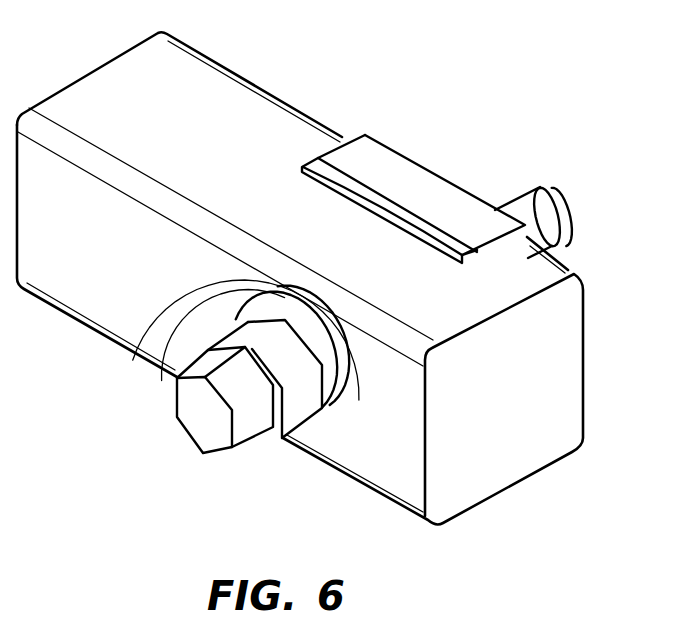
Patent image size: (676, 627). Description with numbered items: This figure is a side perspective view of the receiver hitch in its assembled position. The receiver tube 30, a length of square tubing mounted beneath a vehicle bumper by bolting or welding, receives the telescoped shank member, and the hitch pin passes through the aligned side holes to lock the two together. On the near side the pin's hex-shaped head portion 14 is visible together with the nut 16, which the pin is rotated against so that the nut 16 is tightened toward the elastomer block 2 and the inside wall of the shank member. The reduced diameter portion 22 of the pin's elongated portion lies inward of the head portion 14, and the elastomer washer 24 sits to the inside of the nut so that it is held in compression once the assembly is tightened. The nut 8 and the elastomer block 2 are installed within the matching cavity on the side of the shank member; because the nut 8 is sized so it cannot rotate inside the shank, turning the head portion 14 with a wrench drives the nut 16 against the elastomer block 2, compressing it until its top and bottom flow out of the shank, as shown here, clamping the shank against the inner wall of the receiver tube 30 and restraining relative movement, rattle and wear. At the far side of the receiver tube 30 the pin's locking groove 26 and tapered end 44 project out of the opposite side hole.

The elastomer block 2 is at (365, 185).
The nut 8 is at (440, 177).
The head portion 14 is at (200, 425).
The nut 16 is at (255, 420).
The reduced diameter portion 22 is at (161, 380).
The elastomer washer 24 is at (133, 360).
The locking groove 26 is at (540, 193).
The receiver tube 30 is at (240, 100).
The tapered end 44 is at (570, 233).